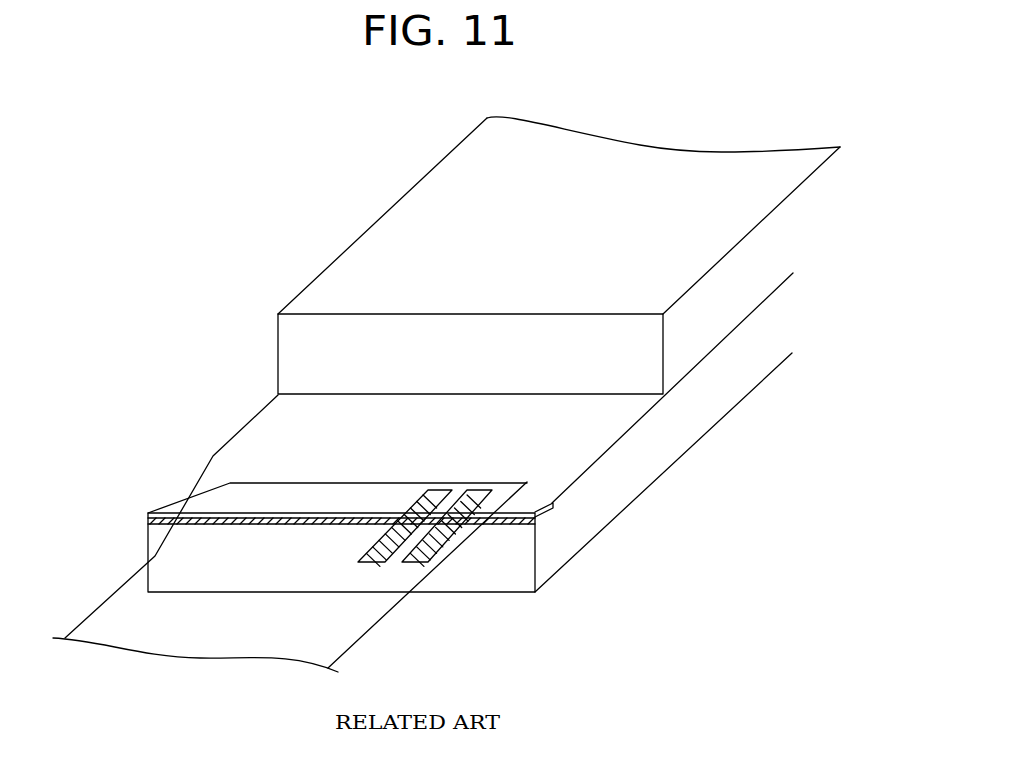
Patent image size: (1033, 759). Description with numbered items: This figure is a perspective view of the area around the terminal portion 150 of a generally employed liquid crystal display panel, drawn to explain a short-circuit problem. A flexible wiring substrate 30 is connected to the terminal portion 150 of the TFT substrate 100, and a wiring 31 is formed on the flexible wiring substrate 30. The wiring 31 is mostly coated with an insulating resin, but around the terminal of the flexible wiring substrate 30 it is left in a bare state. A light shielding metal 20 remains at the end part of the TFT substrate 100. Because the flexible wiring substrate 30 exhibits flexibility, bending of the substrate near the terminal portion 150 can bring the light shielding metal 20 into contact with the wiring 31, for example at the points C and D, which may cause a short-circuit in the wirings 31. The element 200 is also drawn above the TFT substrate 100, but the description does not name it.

The block (upper member) 200 is at (327, 269).
The TFT substrate 100 is at (265, 405).
The terminal portion 150 is at (255, 453).
The flexible wiring substrate 30 is at (373, 627).
The light shielding metal 20 is at (510, 522).
The wiring 31 is at (453, 548).
The contact point C is at (425, 508).
The contact point D is at (452, 512).